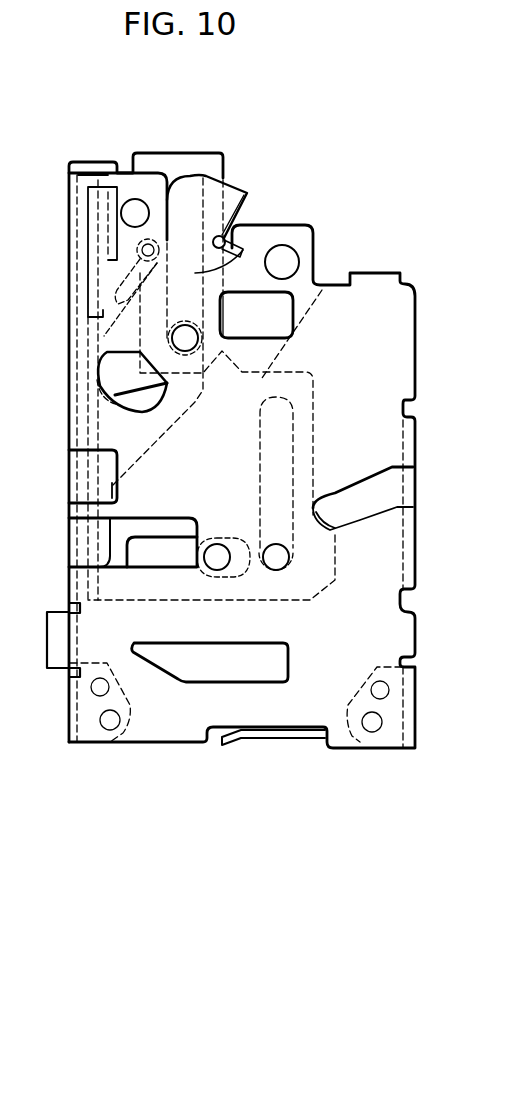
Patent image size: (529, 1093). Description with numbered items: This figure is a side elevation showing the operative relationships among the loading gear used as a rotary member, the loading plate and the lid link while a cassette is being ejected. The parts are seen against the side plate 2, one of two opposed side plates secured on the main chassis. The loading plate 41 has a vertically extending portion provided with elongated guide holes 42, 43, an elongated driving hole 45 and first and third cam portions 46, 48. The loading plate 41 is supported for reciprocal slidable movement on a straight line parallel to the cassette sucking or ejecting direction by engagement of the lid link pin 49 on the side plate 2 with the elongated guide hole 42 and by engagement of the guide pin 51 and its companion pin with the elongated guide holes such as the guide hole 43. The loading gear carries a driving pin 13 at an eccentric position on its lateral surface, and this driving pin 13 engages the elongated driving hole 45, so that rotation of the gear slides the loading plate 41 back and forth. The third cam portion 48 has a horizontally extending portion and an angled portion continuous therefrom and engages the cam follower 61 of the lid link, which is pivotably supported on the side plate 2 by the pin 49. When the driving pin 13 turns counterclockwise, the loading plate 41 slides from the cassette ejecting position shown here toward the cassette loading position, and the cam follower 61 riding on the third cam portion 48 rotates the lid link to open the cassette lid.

The side plate 2 is at (387, 578).
The driving pin 13 is at (226, 566).
The loading plate 41 is at (315, 303).
The elongated guide hole 42 is at (242, 256).
The elongated guide hole 43 is at (283, 436).
The elongated driving hole 45 is at (145, 558).
The first cam portion 46 is at (150, 447).
The third cam portion 48 is at (128, 265).
The lid link pin 49 is at (170, 336).
The guide pin 51 is at (283, 556).
The cam follower 61 is at (138, 247).